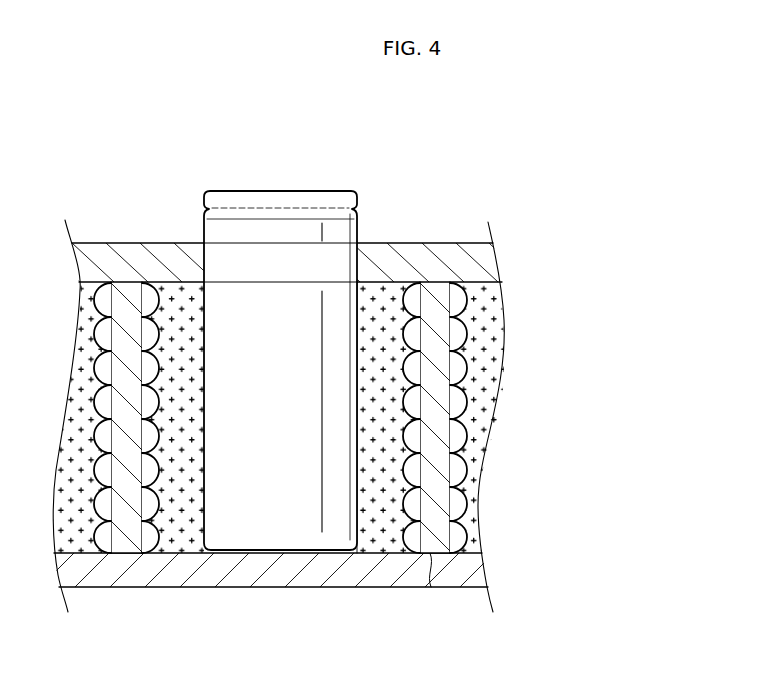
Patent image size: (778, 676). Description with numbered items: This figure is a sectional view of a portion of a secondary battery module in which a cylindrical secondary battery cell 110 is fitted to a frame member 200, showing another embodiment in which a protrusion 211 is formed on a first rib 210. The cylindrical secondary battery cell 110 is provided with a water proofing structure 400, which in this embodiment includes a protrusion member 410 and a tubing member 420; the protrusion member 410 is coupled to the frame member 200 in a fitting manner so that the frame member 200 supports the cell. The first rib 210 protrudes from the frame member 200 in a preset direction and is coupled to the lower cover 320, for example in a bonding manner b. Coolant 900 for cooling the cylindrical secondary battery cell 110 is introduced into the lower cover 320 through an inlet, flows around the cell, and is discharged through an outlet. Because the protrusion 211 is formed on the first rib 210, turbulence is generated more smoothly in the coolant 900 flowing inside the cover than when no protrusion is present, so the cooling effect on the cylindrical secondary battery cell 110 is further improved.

The cylindrical secondary battery cell 110 is at (329, 181).
The frame member 200 is at (452, 243).
The first rib 210 is at (482, 417).
The protrusion 211 is at (458, 400).
The lower cover 320 is at (374, 588).
The water proofing structure 400 is at (157, 337).
The protrusion member 410 is at (216, 262).
The tubing member 420 is at (220, 308).
The coolant 900 is at (383, 298).
The bonding manner b is at (431, 588).